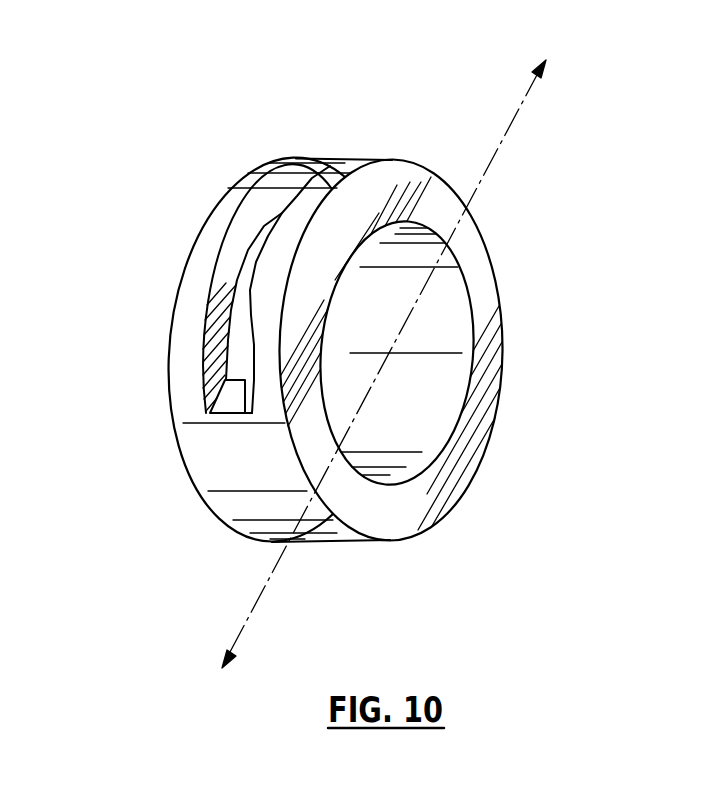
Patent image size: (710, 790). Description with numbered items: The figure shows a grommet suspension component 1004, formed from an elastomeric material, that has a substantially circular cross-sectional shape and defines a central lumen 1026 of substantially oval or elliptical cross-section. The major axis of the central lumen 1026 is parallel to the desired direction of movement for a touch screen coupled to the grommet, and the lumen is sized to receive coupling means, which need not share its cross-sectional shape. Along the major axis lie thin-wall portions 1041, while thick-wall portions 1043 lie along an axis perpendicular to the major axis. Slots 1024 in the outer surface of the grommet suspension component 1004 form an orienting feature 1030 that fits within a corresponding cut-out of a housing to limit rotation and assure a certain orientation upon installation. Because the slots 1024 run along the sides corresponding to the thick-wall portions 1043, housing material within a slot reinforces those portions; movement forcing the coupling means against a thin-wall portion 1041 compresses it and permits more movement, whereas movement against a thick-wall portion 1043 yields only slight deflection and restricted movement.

The grommet suspension component 1004 is at (376, 356).
The thin-wall portions 1041 is at (441, 194).
The thick-wall portions 1043 is at (326, 213).
The central lumen 1026 is at (437, 317).
The slots 1024 is at (215, 327).
The orienting feature 1030 is at (243, 278).